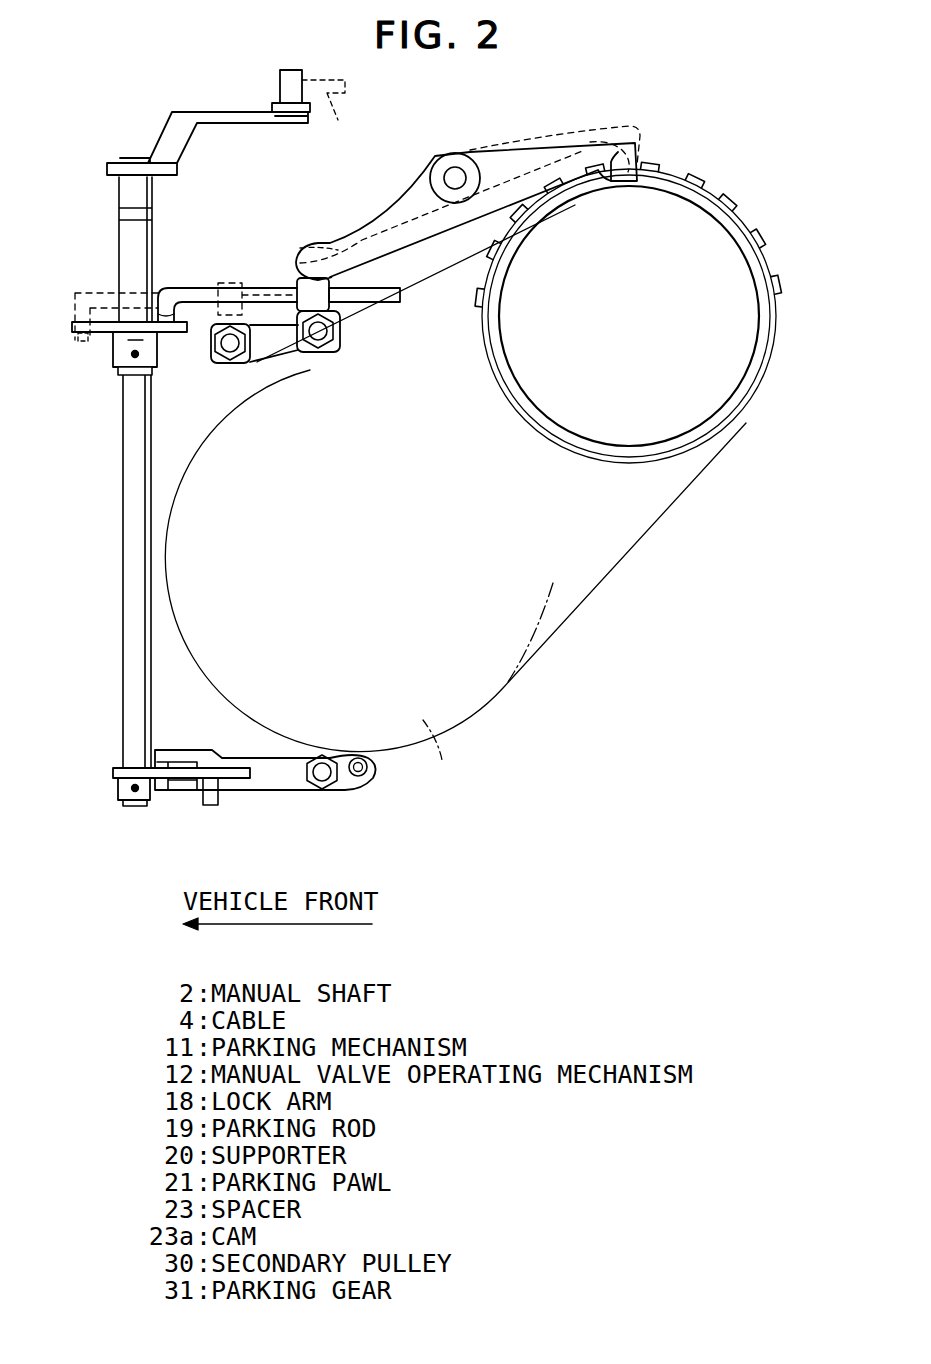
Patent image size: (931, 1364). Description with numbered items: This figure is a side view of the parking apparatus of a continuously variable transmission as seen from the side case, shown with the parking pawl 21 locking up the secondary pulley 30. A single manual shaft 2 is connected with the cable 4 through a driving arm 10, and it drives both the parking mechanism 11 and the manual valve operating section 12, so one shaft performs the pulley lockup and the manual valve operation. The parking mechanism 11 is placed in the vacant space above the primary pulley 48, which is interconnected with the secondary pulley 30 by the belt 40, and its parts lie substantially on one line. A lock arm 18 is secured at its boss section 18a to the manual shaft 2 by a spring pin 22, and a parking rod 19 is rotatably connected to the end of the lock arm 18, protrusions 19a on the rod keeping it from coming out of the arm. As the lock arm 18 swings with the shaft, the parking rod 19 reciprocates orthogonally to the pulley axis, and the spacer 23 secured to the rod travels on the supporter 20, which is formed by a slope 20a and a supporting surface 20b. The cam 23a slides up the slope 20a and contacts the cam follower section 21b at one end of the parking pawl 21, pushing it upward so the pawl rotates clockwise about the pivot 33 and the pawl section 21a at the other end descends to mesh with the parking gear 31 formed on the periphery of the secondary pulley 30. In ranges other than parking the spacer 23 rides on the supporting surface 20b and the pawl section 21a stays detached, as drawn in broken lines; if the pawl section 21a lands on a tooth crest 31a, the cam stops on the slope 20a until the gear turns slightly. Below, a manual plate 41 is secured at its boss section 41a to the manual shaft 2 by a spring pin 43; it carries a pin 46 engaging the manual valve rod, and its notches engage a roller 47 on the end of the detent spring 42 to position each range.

The manual shaft 2 is at (132, 250).
The cable 4 is at (308, 107).
The driving arm 10 is at (183, 120).
The parking mechanism 11 is at (372, 197).
The manual valve operating section 12 is at (229, 802).
The lock arm 18 is at (128, 380).
The boss section 18a is at (154, 357).
The parking rod 19 is at (186, 306).
The protrusion 19a is at (182, 322).
The supporter 20 is at (308, 374).
The slope 20a is at (287, 353).
The supporting surface 20b is at (337, 342).
The parking pawl 21 is at (484, 175).
The pawl section 21a is at (642, 157).
The cam follower section 21b is at (306, 256).
The spring pin 22 is at (133, 368).
The spacer 23 is at (392, 286).
The cam 23a is at (298, 290).
The secondary pulley 30 is at (723, 372).
The parking gear 31 is at (634, 300).
The tooth crest 31a is at (690, 178).
The pivot 33 is at (455, 177).
The belt 40 is at (630, 543).
The manual plate 41 is at (151, 802).
The boss section 41a is at (118, 789).
The detent spring 42 is at (295, 780).
The spring pin 43 is at (140, 802).
The pin 46 is at (213, 806).
The roller 47 is at (166, 766).
The primary pulley 48 is at (431, 746).